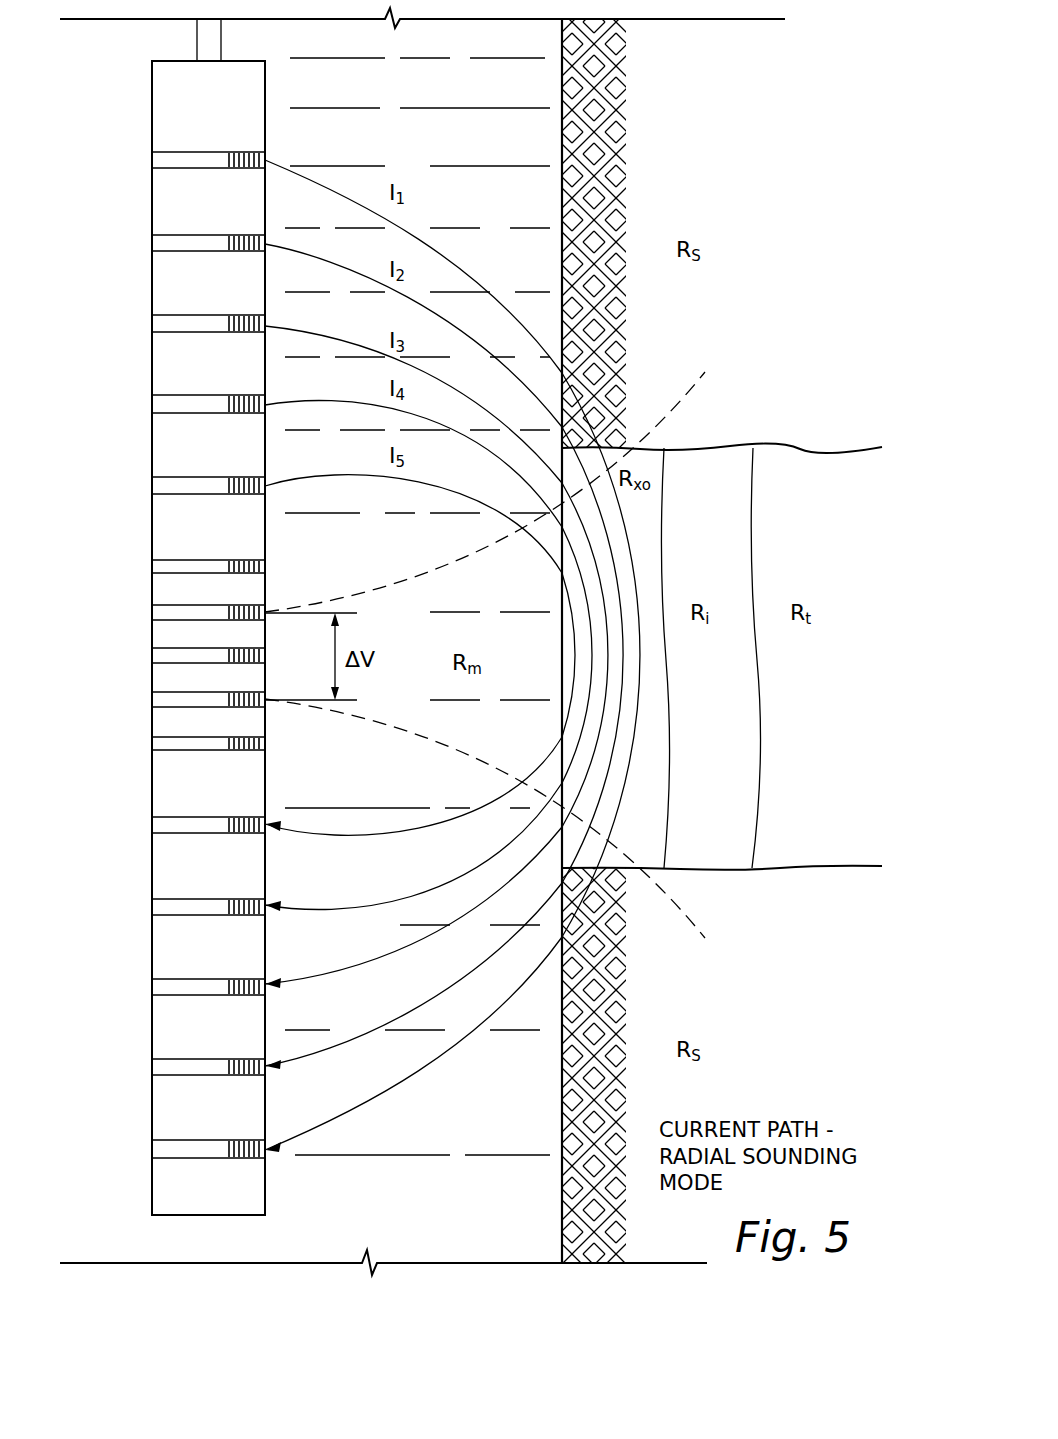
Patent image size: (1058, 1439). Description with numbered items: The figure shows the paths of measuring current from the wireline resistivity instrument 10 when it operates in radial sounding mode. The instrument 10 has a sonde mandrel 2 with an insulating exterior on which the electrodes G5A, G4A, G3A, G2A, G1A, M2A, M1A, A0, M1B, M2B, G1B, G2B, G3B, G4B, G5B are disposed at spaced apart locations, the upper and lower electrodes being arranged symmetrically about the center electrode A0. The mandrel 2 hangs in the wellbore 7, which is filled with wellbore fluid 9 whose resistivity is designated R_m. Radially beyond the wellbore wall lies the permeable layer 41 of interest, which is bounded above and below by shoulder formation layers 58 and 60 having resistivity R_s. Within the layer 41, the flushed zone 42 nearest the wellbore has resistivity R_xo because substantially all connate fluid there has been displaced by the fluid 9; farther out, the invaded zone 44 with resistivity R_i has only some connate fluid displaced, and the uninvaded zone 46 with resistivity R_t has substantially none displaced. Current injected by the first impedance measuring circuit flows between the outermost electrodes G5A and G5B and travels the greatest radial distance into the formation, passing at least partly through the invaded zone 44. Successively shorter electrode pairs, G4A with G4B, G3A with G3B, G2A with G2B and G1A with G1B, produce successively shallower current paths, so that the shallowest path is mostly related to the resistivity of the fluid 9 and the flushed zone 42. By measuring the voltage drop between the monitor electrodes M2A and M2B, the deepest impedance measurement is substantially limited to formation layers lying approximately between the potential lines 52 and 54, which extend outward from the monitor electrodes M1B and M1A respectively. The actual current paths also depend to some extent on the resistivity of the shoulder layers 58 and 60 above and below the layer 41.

The sonde mandrel 2 is at (152, 78).
The instrument 10 is at (140, 115).
The fluid 9 is at (417, 143).
The wellbore 7 is at (538, 140).
The layer 41 is at (732, 447).
The flushed zone 42 is at (651, 844).
The invaded zone 44 is at (723, 704).
The uninvaded zone 46 is at (821, 704).
The formation layer 58 is at (803, 338).
The formation layer 60 is at (803, 980).
The potential line 52 is at (430, 742).
The potential line 54 is at (430, 570).
The guard electrode G5A is at (152, 160).
The guard electrode G4A is at (152, 243).
The guard electrode G3A is at (152, 324).
The guard electrode G2A is at (152, 404).
The guard electrode G1A is at (152, 486).
The monitor electrode M2A is at (152, 567).
The monitor electrode M1A is at (152, 613).
The center electrode A0 is at (152, 656).
The monitor electrode M1B is at (152, 700).
The monitor electrode M2B is at (152, 744).
The guard electrode G1B is at (152, 825).
The guard electrode G2B is at (152, 907).
The guard electrode G3B is at (152, 987).
The guard electrode G4B is at (152, 1067).
The guard electrode G5B is at (152, 1149).